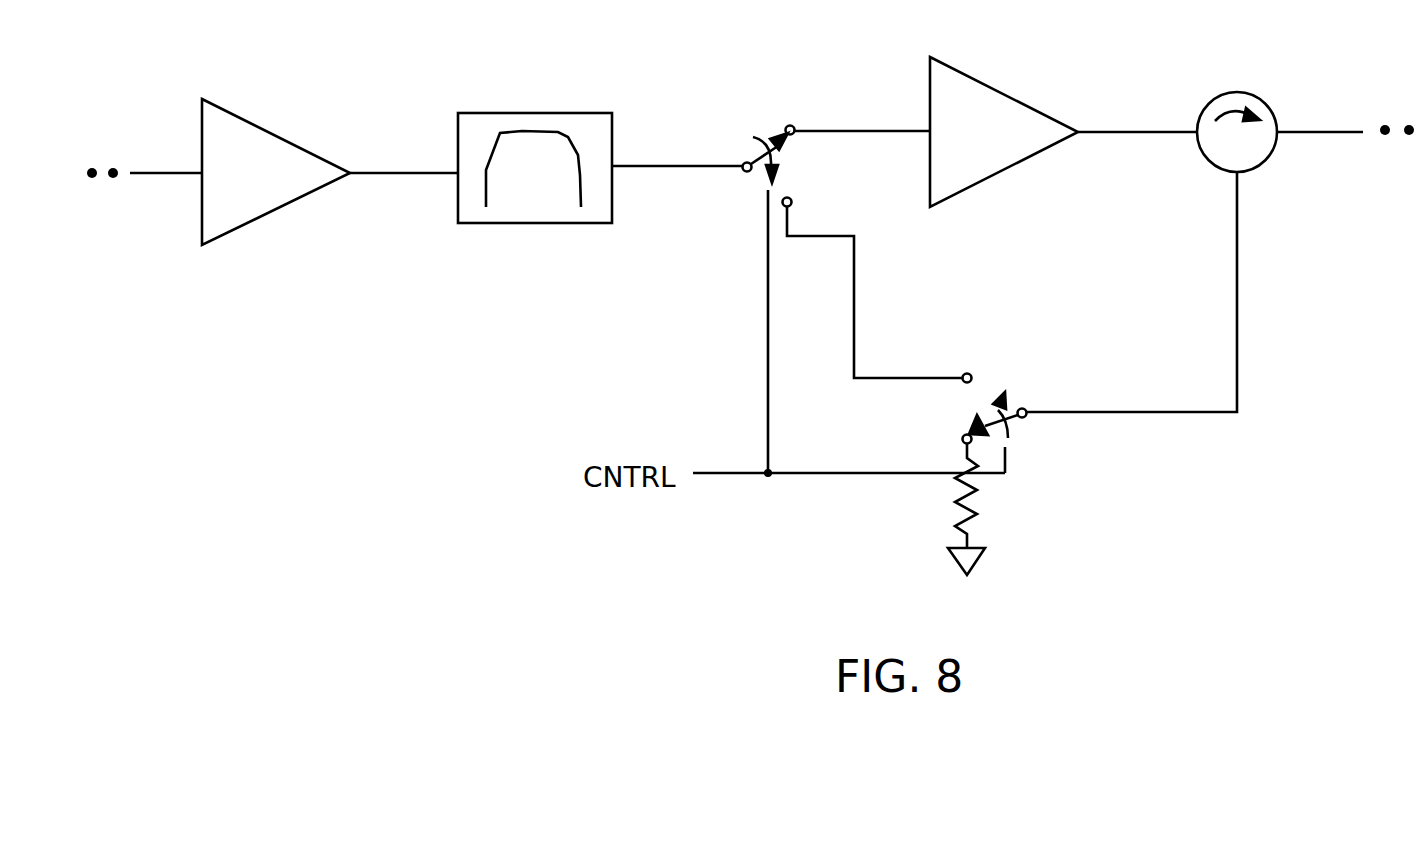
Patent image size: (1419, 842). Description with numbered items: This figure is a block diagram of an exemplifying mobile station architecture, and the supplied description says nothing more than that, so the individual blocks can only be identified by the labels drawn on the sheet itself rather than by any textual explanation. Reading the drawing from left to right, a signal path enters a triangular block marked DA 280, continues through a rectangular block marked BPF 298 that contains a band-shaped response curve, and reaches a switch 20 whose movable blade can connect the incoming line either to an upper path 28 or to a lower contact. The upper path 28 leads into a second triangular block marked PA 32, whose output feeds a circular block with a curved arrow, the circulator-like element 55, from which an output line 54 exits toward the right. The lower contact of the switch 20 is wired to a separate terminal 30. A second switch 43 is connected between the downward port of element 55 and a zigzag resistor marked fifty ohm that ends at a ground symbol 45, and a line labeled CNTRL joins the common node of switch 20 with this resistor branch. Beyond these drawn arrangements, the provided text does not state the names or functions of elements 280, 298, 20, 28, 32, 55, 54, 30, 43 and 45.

The driver amplifier 280 is at (215, 105).
The band pass filter 298 is at (571, 113).
The switch 20 is at (748, 157).
The transmit path 28 is at (833, 131).
The power amplifier 32 is at (945, 63).
The circulator 55 is at (1237, 92).
The output 54 is at (1308, 132).
The receive path terminal 30 is at (878, 378).
The switch 43 is at (1020, 408).
The ground termination 45 is at (972, 523).